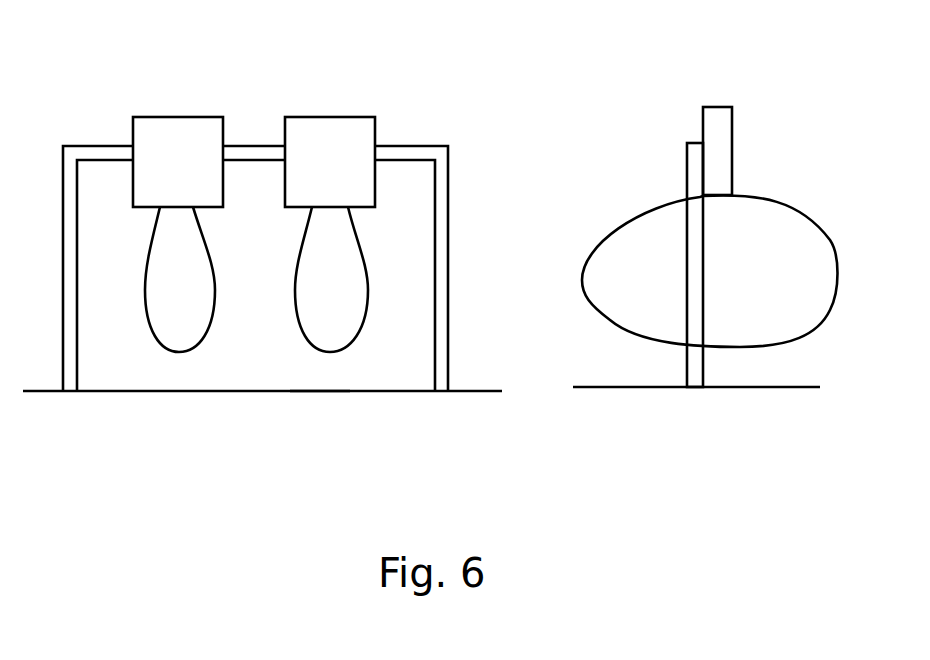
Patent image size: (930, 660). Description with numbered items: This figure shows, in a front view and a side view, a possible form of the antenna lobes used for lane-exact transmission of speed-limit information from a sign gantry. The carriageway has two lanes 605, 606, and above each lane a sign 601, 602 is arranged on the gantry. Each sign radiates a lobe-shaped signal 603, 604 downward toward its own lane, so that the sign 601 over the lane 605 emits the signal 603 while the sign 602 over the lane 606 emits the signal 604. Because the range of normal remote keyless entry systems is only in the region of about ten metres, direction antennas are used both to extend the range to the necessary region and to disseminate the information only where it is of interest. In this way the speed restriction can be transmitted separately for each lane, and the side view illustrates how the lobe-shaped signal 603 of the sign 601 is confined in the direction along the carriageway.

The sign 601 is at (178, 117).
The sign 602 is at (332, 117).
The lobe-shaped signal 603 is at (193, 335).
The lobe-shaped signal 604 is at (347, 335).
The lane 605 is at (168, 391).
The lane 606 is at (320, 390).